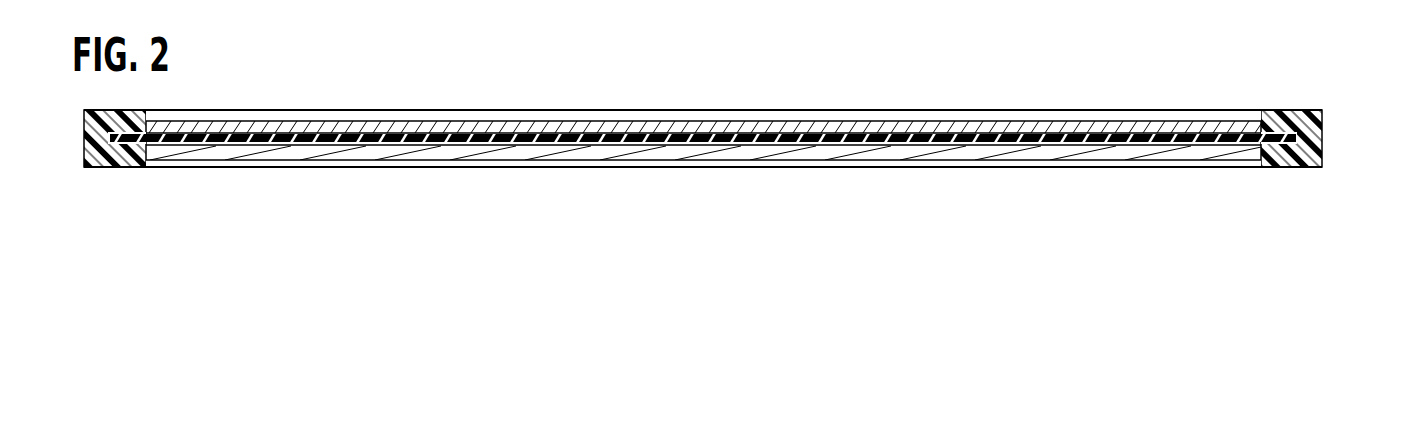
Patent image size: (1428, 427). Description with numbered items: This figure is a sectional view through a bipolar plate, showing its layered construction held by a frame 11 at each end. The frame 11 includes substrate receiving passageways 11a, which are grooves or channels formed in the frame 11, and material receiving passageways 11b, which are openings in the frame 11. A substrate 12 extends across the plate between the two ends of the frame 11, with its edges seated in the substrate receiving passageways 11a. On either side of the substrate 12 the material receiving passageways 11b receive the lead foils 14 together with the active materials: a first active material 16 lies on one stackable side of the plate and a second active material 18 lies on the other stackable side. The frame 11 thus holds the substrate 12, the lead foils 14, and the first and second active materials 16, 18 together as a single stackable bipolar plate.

The frame 11 is at (85, 168).
The substrate receiving passageways 11a is at (116, 116).
The material receiving passageways 11b is at (1248, 114).
The substrate 12 is at (131, 167).
The lead foils 14 is at (478, 139).
The first active material 16 is at (1147, 124).
The second active material 18 is at (1153, 155).